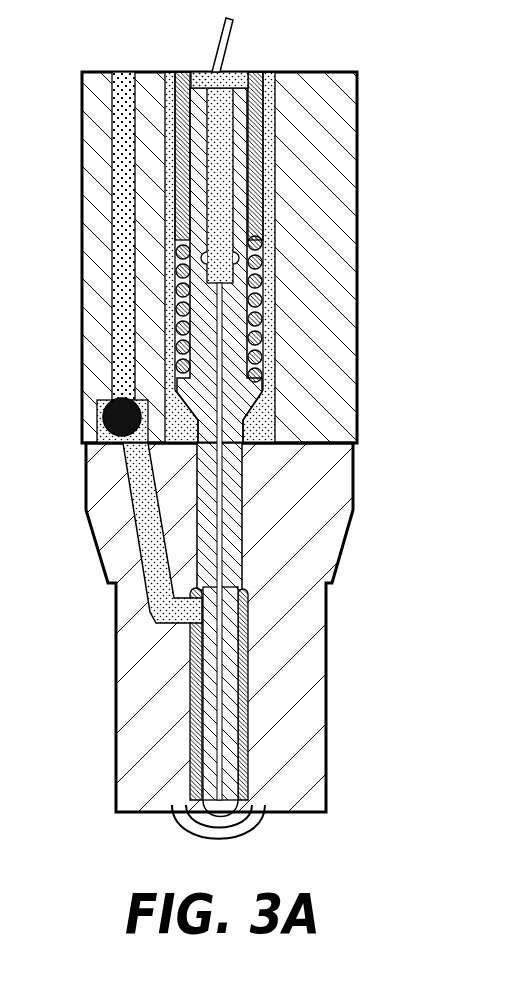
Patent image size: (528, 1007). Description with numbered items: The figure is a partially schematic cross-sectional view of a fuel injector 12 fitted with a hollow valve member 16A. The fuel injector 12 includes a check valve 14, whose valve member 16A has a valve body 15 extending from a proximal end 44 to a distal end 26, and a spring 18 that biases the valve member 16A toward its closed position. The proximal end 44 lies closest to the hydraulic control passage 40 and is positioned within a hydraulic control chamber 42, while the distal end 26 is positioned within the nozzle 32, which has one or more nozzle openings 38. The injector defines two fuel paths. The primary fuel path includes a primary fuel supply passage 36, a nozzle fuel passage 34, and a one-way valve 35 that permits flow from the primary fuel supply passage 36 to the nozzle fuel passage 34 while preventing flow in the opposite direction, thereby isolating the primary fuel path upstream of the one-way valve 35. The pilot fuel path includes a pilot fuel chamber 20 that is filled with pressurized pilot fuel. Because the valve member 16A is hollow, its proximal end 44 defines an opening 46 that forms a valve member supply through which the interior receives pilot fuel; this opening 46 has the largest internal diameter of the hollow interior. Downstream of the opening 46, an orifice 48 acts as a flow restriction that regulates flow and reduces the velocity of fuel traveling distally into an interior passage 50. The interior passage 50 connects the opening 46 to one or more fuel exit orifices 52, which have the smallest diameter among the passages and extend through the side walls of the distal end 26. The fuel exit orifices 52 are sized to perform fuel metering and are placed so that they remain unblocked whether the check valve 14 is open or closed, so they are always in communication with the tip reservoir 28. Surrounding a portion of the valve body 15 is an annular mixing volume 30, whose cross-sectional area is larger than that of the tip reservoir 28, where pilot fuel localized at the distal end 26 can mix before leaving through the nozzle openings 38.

The fuel injector 12 is at (357, 153).
The check valve 14 is at (317, 325).
The valve body 15 is at (238, 488).
The valve member 16A is at (357, 72).
The spring 18 is at (262, 262).
The pilot fuel chamber 20 is at (272, 425).
The distal end 26 is at (240, 805).
The tip reservoir 28 is at (192, 673).
The mixing volume 30 is at (193, 770).
The nozzle 32 is at (120, 703).
The nozzle fuel passage 34 is at (138, 500).
The one-way valve 35 is at (103, 413).
The primary fuel supply passage 36 is at (113, 210).
The nozzle openings 38 is at (250, 820).
The hydraulic control passage 40 is at (233, 33).
The hydraulic control chamber 42 is at (200, 82).
The proximal end 44 is at (203, 83).
The opening 46 is at (208, 97).
The orifice 48 is at (210, 258).
The interior passage 50 is at (222, 620).
The fuel exit orifices 52 is at (200, 803).